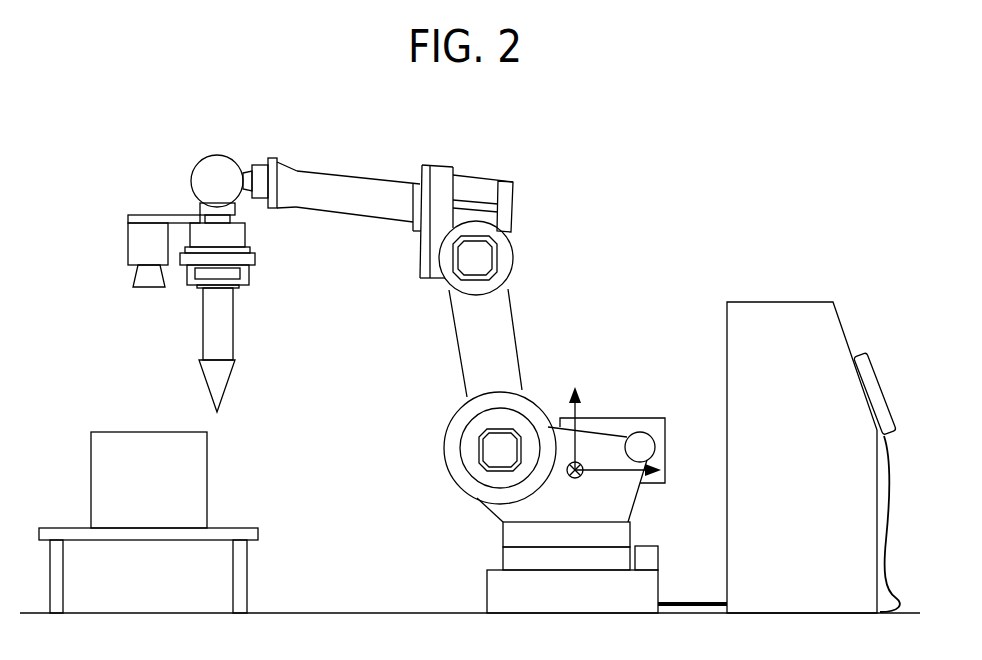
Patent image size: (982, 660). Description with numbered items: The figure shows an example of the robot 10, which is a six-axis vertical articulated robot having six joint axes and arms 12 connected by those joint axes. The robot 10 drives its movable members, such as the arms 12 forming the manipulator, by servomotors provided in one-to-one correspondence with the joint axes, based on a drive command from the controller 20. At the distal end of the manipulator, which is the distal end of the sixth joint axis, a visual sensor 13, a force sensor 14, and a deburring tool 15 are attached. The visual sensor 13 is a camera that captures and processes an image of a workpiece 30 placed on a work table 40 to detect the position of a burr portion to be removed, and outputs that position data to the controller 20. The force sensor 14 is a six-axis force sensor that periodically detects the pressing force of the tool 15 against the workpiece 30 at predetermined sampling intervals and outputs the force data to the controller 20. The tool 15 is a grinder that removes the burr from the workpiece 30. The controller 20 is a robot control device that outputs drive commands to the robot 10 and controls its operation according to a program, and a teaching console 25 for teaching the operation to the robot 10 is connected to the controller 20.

The robot 10 is at (597, 172).
The arms 12 is at (357, 173).
The visual sensor 13 is at (128, 251).
The force sensor 14 is at (249, 271).
The deburring tool 15 is at (233, 325).
The controller 20 is at (778, 302).
The teaching console 25 is at (884, 392).
The workpiece 30 is at (207, 470).
The work table 40 is at (258, 532).